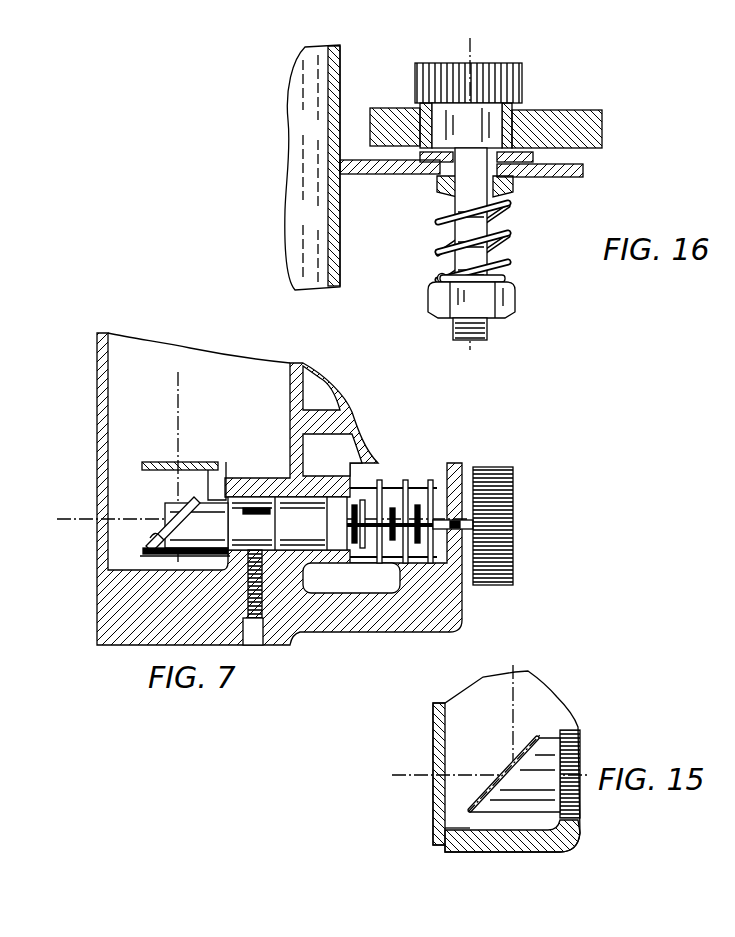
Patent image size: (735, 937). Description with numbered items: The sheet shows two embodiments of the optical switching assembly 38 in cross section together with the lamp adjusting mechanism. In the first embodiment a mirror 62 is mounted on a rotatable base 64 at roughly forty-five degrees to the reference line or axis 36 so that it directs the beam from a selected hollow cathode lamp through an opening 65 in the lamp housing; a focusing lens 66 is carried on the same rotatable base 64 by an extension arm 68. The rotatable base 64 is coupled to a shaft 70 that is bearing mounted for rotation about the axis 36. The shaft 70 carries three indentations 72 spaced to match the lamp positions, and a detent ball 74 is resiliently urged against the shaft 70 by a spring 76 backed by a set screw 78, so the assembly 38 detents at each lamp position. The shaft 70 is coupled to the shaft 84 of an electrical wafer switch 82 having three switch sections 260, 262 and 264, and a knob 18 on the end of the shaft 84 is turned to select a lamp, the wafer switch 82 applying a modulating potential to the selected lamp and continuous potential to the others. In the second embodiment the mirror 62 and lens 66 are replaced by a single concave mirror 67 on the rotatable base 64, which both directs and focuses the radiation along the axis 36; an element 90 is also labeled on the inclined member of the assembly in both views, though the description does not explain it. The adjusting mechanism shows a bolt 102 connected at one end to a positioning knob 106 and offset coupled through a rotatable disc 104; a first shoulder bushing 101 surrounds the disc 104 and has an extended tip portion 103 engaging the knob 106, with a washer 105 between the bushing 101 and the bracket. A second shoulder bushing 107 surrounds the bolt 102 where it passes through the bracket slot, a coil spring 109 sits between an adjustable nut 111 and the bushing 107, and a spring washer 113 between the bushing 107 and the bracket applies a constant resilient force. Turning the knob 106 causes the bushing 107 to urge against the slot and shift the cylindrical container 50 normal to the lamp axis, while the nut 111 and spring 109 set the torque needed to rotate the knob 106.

In FIG. 7, the knob 18 is at (505, 513).
In FIG. 7, the reference line or axis 36 is at (80, 520).
In FIG. 15, the reference line or axis 36 is at (412, 775).
In FIG. 7, the optical switching assembly 38 is at (163, 558).
In FIG. 15, the optical switching assembly 38 is at (460, 848).
In FIG. 16, the cylindrical container 50 is at (300, 160).
In FIG. 7, the mirror 62 is at (160, 537).
In FIG. 7, the rotatable base 64 is at (201, 558).
In FIG. 15, the rotatable base 64 is at (577, 845).
In FIG. 7, the opening 65 is at (98, 508).
In FIG. 15, the opening 65 is at (428, 790).
In FIG. 7, the focusing lens 66 is at (170, 463).
In FIG. 15, the concave mirror 67 is at (538, 740).
In FIG. 7, the extension arm 68 is at (225, 470).
In FIG. 7, the shaft 70 is at (255, 497).
In FIG. 15, the shaft 70 is at (570, 733).
In FIG. 7, the indentations 72 is at (258, 542).
In FIG. 7, the detent ball 74 is at (250, 555).
In FIG. 7, the spring 76 is at (282, 571).
In FIG. 7, the set screw 78 is at (268, 605).
In FIG. 7, the electrical wafer switch 82 is at (387, 495).
In FIG. 7, the shaft 84 is at (468, 570).
In FIG. 7, the cam member 90 is at (175, 518).
In FIG. 15, the cam member 90 is at (513, 775).
In FIG. 16, the first shoulder bushing 101 is at (417, 133).
In FIG. 16, the bolt 102 is at (487, 332).
In FIG. 16, the extended tip portion 103 is at (412, 104).
In FIG. 16, the rotatable disc 104 is at (482, 115).
In FIG. 16, the washer 105 is at (533, 155).
In FIG. 16, the positioning knob 106 is at (440, 63).
In FIG. 16, the second shoulder bushing 107 is at (440, 203).
In FIG. 16, the coil spring 109 is at (440, 258).
In FIG. 16, the adjustable nut 111 is at (515, 296).
In FIG. 16, the spring washer 113 is at (512, 178).
In FIG. 7, the switch section 260 is at (396, 562).
In FIG. 7, the switch section 262 is at (405, 565).
In FIG. 7, the switch section 264 is at (460, 585).